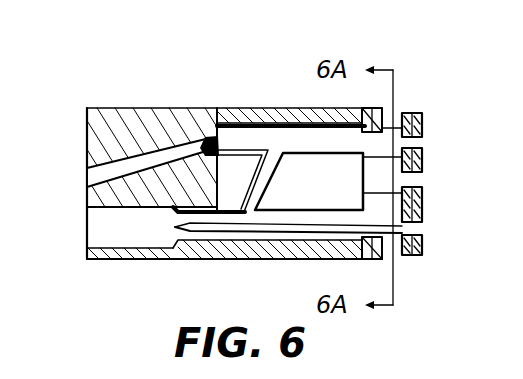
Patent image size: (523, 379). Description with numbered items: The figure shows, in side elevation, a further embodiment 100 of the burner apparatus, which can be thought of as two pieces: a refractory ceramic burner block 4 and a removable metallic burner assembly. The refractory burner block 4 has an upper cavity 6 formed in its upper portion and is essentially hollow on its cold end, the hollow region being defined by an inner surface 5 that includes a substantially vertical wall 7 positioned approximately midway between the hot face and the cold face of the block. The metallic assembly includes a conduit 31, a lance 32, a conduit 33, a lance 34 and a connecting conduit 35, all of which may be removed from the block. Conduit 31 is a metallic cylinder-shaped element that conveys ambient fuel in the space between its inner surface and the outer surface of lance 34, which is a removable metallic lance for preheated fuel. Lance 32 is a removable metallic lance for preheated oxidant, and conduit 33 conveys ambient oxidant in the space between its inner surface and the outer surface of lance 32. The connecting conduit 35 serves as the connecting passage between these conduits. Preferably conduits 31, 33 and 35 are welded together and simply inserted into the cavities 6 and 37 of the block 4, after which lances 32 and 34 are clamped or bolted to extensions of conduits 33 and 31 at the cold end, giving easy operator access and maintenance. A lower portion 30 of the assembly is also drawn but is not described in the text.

The burner apparatus embodiment 100 is at (330, 32).
The refractory burner block 4 is at (122, 118).
The inner surface 5 is at (218, 148).
The upper cavity 6 is at (166, 143).
The wall 7 is at (217, 183).
The lower housing portion 30 is at (177, 261).
The conduit 31 is at (283, 253).
The lance 32 is at (423, 140).
The conduit 33 is at (318, 158).
The lance 34 is at (423, 245).
The connecting conduit 35 is at (273, 191).
The cavity 37 is at (110, 203).